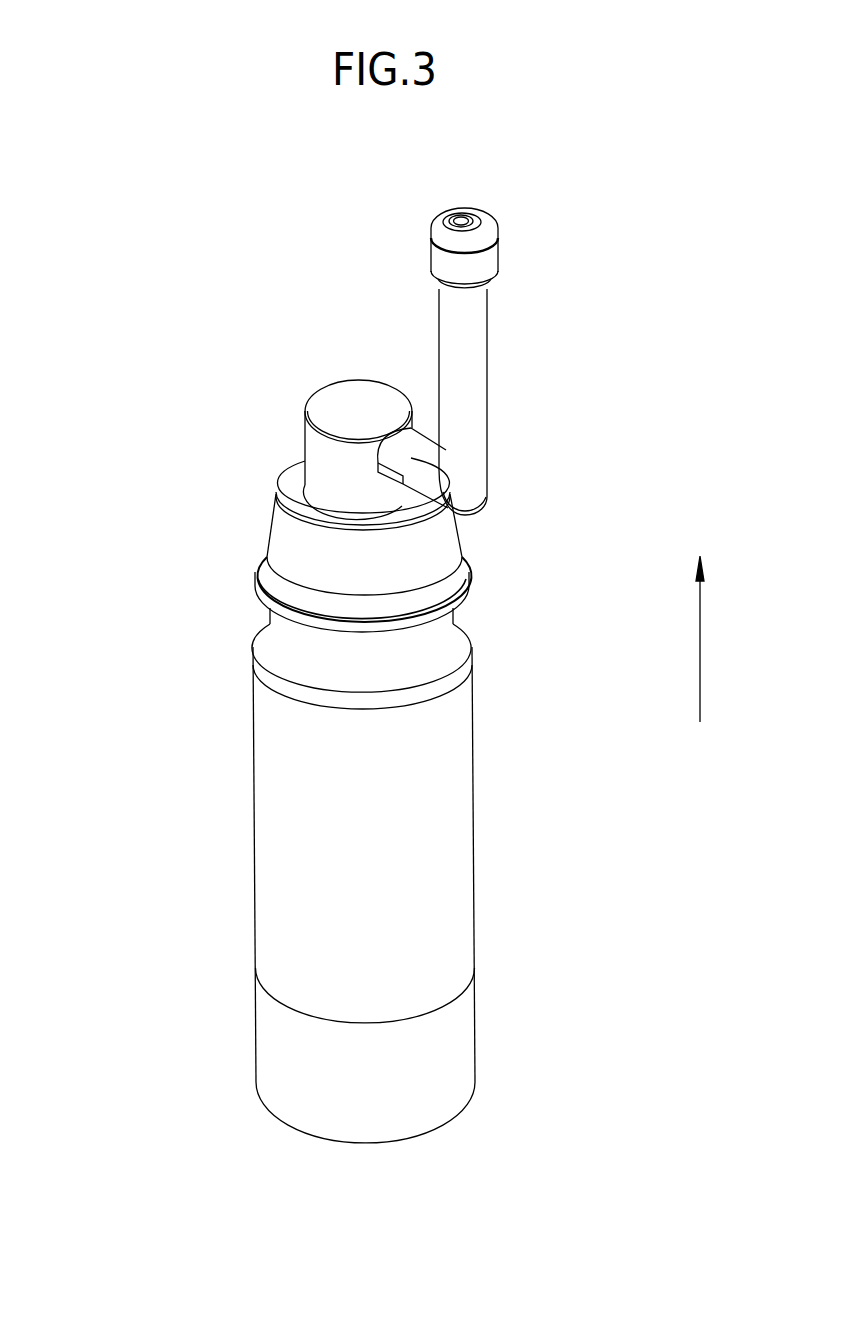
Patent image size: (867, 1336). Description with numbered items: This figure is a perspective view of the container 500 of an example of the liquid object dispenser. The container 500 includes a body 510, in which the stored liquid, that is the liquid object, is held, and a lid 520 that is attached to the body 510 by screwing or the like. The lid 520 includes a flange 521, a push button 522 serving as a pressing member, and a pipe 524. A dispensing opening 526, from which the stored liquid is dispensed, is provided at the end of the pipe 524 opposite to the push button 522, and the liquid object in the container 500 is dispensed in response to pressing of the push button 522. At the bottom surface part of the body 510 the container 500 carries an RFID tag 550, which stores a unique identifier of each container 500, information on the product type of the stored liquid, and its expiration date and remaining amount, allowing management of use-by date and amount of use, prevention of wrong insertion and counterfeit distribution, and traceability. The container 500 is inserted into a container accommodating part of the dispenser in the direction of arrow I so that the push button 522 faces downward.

The container 500 is at (83, 191).
The body 510 is at (447, 827).
The lid 520 is at (281, 523).
The flange 521 is at (468, 573).
The push button 522 is at (345, 397).
The pipe 524 is at (487, 387).
The dispensing opening 526 is at (478, 213).
The RFID tag 550 is at (367, 1145).